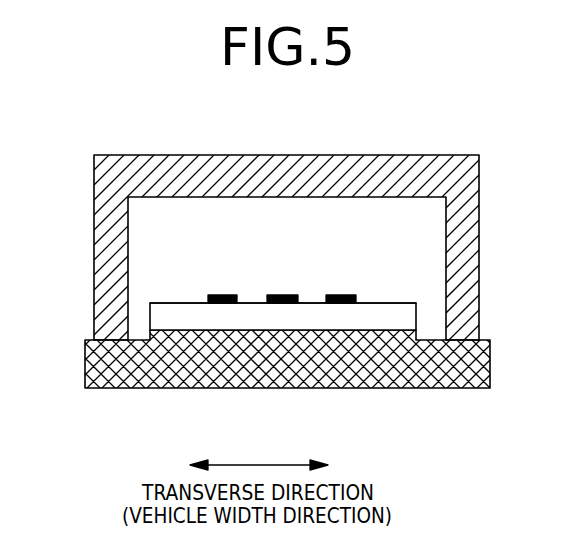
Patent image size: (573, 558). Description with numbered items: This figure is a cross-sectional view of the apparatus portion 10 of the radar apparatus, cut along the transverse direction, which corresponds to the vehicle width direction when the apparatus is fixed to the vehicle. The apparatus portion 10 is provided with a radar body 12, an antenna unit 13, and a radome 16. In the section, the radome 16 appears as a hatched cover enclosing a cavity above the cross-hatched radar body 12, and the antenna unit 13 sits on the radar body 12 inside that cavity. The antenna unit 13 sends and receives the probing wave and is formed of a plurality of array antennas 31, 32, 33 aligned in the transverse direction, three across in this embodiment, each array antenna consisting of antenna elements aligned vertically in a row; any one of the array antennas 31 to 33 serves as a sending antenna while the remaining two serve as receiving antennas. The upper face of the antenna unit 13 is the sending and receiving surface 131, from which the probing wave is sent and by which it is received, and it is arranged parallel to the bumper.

The apparatus portion 10 is at (463, 142).
The radar body 12 is at (85, 377).
The antenna unit 13 is at (393, 310).
The sending and receiving surface 131 is at (180, 388).
The radome 16 is at (94, 180).
The array antenna 31 is at (225, 304).
The array antenna 32 is at (293, 304).
The array antenna 33 is at (348, 304).